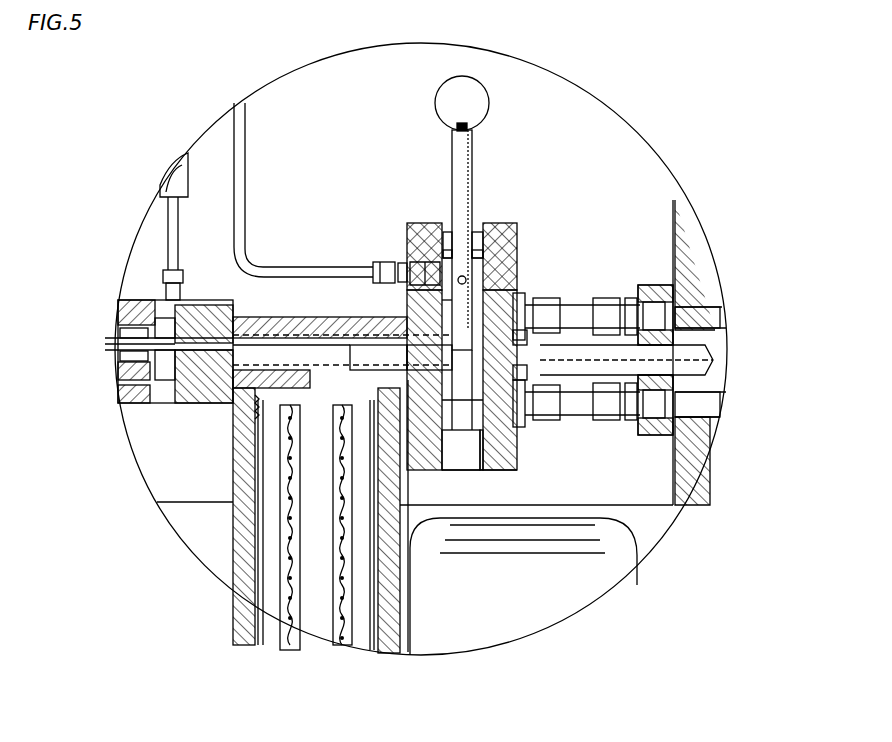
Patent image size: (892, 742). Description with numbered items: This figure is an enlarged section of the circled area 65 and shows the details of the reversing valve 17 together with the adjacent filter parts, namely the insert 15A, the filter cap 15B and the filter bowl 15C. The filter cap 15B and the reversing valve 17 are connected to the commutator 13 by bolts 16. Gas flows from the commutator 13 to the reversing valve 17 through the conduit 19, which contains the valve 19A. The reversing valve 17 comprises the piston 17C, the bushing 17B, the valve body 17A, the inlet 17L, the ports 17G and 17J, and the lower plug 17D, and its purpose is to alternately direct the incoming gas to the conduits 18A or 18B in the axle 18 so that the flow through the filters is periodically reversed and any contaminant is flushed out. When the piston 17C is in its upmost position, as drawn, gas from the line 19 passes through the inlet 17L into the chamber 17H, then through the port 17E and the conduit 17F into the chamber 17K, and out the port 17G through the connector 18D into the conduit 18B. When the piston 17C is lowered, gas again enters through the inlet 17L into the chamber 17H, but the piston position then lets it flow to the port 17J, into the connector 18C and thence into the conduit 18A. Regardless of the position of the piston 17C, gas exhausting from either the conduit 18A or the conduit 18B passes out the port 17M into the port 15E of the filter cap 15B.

The circled area 65 is at (552, 66).
The commutator 13 is at (138, 408).
The insert 15A is at (285, 598).
The filter cap 15B is at (240, 400).
The filter bowl 15C is at (408, 652).
The port 15E is at (360, 355).
The bolts 16 is at (548, 318).
The reversing valve 17 is at (410, 220).
The valve body 17A is at (500, 235).
The bushing 17B is at (478, 225).
The piston 17C is at (458, 158).
The lower plug 17D is at (455, 460).
The port 17E is at (470, 280).
The conduit 17F is at (490, 465).
The port 17G is at (505, 410).
The chamber 17H is at (515, 270).
The port 17J is at (526, 338).
The chamber 17K is at (456, 412).
The inlet 17L is at (412, 240).
The port 17M is at (420, 355).
The axle 18 is at (716, 334).
The conduit 18A is at (703, 320).
The conduit 18B is at (707, 405).
The connector 18C is at (650, 300).
The connector 18D is at (615, 420).
The conduit 19 is at (240, 112).
The valve 19A is at (176, 170).